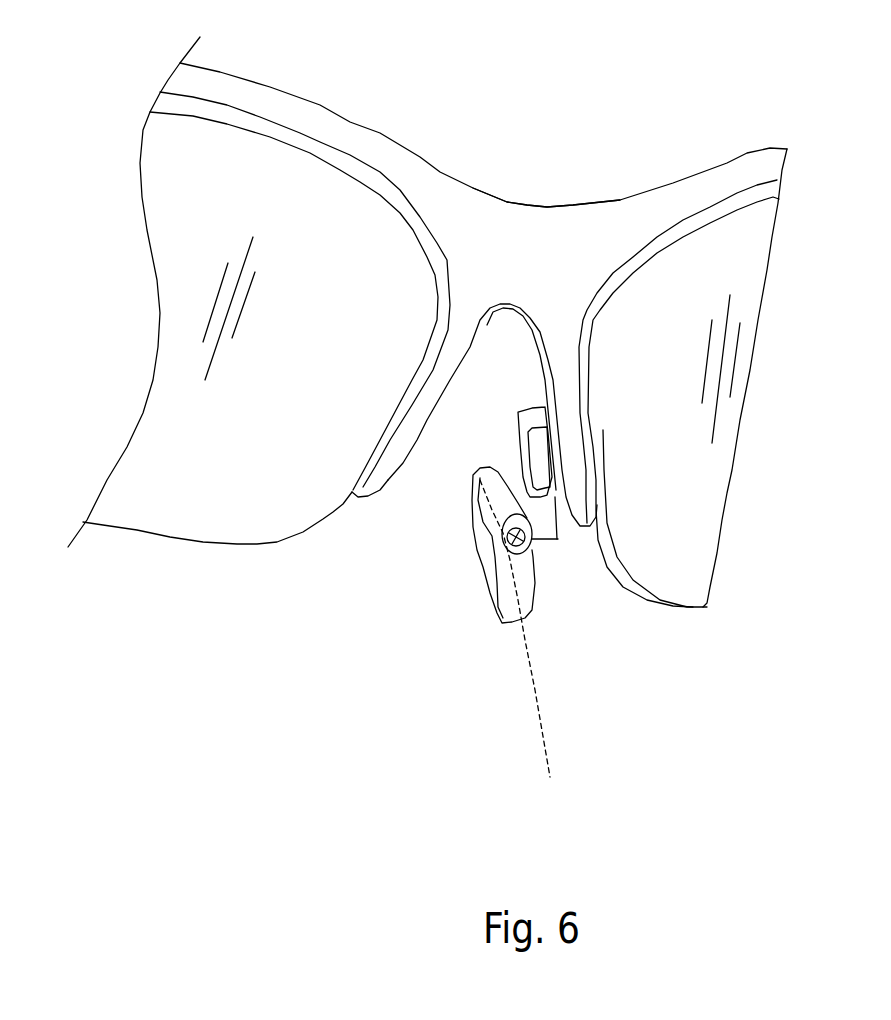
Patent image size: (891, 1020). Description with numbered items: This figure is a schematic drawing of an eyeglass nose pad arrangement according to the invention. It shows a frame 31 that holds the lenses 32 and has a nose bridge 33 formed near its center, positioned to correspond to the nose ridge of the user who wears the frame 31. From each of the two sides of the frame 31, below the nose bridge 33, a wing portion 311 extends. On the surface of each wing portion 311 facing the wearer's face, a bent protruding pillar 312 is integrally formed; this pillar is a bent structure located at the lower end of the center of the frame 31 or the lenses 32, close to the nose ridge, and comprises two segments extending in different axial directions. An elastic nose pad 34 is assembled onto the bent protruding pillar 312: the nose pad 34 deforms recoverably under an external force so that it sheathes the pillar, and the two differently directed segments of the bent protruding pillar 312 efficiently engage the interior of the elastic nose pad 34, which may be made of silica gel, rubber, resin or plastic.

The frame 31 is at (461, 322).
The lenses 32 is at (530, 386).
The nose bridge 33 is at (546, 185).
The wing portion 311 is at (399, 534).
The bent protruding pillar 312 is at (565, 521).
The elastic nose pad 34 is at (466, 622).